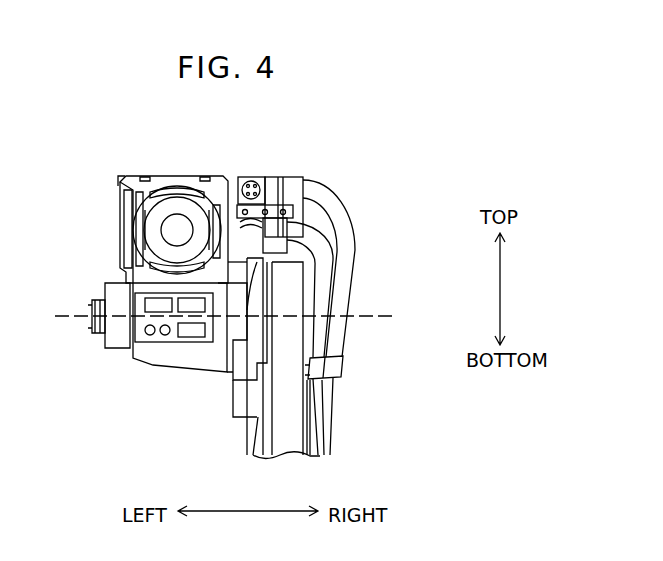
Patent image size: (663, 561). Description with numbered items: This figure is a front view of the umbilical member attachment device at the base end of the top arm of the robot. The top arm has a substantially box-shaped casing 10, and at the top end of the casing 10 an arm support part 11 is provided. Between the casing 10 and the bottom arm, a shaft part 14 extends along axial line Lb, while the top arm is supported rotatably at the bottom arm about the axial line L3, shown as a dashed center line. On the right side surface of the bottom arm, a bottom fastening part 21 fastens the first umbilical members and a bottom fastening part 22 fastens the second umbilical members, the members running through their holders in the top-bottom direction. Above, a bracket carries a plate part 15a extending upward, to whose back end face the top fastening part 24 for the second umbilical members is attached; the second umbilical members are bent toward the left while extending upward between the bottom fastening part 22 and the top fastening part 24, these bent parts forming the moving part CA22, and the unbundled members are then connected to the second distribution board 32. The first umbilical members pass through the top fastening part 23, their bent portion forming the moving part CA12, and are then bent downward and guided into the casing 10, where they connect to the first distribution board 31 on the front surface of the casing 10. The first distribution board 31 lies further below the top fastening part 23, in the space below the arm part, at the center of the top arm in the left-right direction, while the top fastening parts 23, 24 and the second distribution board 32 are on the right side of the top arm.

The casing 10 is at (153, 365).
The arm support part 11 is at (213, 176).
The shaft part 14 is at (175, 214).
The plate part 15a is at (294, 177).
The bottom fastening part 21 is at (333, 380).
The bottom fastening part 22 is at (343, 367).
The top fastening part 23 is at (280, 264).
The top fastening part 24 is at (303, 190).
The first distribution board 31 is at (197, 342).
The second distribution board 32 is at (268, 177).
The moving part CA12 is at (328, 243).
The moving part CA22 is at (333, 205).
The axial line L3 is at (237, 317).